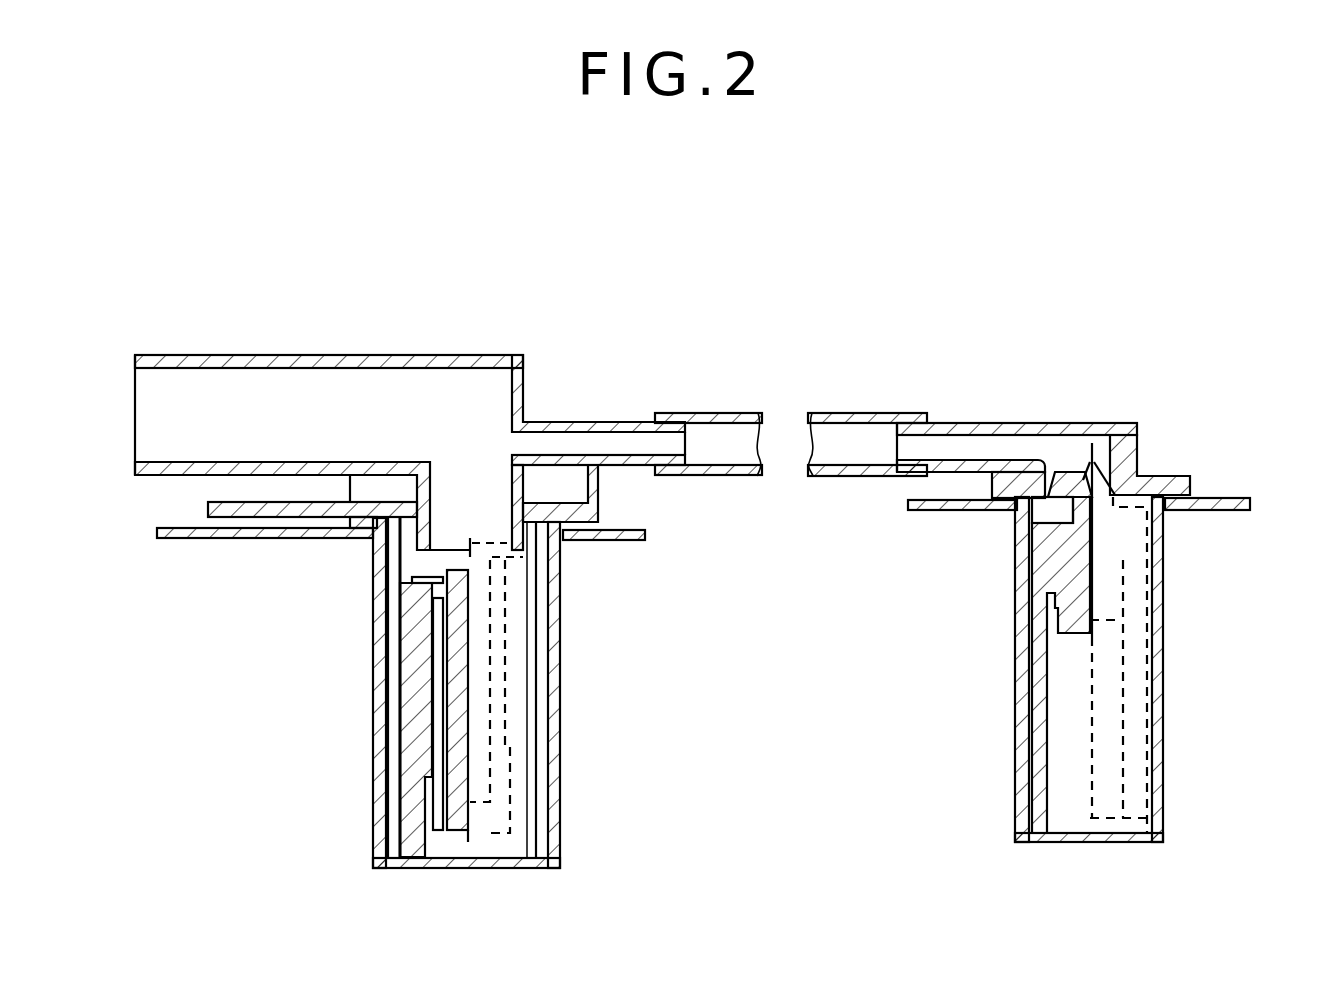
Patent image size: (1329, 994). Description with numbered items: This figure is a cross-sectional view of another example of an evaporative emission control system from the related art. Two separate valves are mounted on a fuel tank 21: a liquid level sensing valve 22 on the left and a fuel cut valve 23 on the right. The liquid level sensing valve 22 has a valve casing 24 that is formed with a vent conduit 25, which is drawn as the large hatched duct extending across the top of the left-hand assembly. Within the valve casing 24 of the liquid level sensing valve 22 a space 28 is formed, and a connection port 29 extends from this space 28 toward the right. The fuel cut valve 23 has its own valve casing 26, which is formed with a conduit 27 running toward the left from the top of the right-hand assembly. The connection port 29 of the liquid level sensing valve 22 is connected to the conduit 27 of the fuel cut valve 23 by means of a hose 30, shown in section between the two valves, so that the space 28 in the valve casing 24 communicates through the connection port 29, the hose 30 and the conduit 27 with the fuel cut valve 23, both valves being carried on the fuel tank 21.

The fuel tank 21 is at (305, 537).
The liquid level sensing valve 22 is at (398, 735).
The fuel cut valve 23 is at (1012, 740).
The valve casing 24 is at (380, 580).
The vent conduit 25 is at (224, 372).
The valve casing 26 is at (1025, 618).
The conduit 27 is at (995, 423).
The space 28 is at (490, 437).
The connection port 29 is at (593, 422).
The hose 30 is at (720, 413).